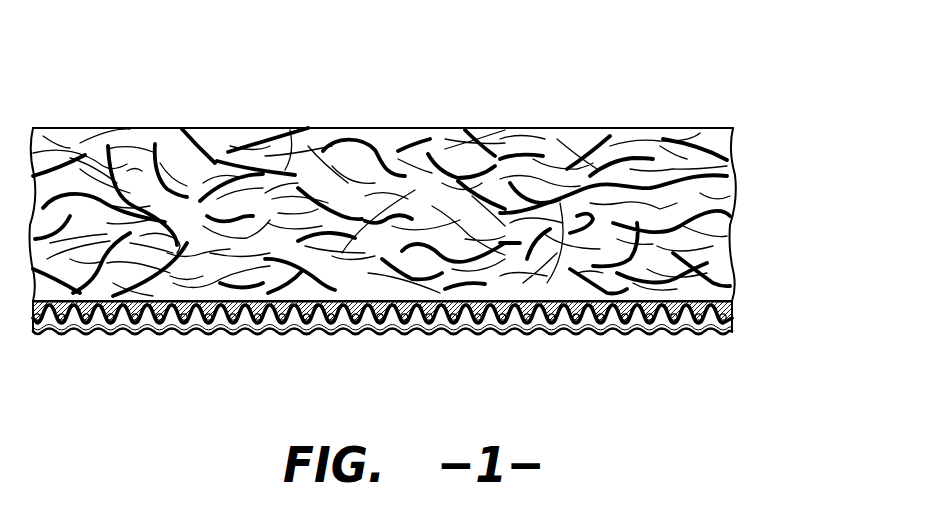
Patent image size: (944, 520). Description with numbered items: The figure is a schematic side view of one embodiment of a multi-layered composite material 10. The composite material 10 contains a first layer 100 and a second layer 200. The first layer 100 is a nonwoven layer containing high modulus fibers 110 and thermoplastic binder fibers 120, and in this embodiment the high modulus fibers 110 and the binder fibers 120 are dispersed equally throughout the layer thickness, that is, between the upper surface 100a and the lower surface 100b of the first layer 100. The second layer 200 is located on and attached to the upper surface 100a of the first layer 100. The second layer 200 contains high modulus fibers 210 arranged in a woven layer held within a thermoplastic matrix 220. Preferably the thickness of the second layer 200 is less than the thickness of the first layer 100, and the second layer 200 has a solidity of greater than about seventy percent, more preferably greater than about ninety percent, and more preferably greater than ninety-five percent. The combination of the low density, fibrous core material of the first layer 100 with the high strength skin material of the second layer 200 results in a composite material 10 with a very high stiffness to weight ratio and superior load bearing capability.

The multi-layered composite material 10 is at (596, 85).
The first layer 100 is at (439, 184).
The upper surface of the first layer 100a is at (735, 302).
The lower surface of the first layer 100b is at (736, 128).
The high modulus fibers 110 is at (184, 137).
The thermoplastic binder fibers 120 is at (308, 137).
The second layer 200 is at (437, 349).
The high modulus fibers 210 is at (134, 332).
The thermoplastic matrix 220 is at (248, 334).